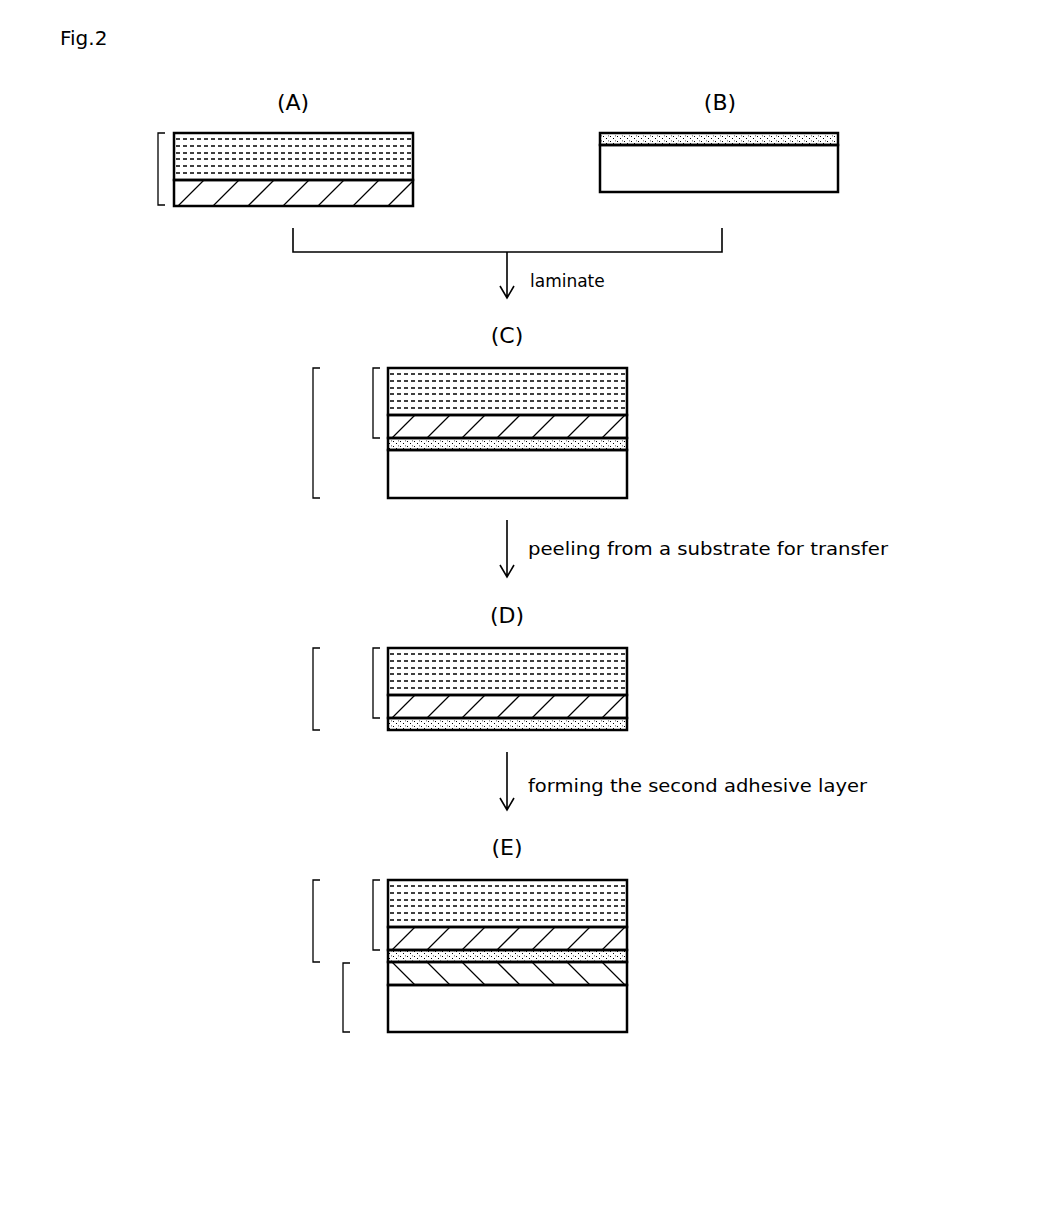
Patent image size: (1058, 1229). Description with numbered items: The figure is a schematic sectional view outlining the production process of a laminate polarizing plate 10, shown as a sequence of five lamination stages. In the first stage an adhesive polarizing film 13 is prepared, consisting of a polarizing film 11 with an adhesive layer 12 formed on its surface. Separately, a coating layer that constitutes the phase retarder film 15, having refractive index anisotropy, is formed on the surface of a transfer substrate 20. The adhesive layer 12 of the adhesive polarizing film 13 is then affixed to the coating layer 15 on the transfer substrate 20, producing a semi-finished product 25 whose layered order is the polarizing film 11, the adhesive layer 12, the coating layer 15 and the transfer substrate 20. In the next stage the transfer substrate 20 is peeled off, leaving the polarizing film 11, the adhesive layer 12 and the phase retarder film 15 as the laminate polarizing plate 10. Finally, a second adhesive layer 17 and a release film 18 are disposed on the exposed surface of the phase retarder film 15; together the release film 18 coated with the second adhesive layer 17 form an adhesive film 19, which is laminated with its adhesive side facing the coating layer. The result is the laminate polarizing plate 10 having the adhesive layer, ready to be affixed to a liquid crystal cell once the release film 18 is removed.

The laminate polarizing plate 10 is at (296, 805).
The polarizing film 11 is at (413, 145).
The adhesive layer 12 is at (413, 190).
The adhesive polarizing film 13 is at (249, 541).
The phase retarder film 15 is at (838, 140).
The second adhesive layer 17 is at (627, 973).
The release film 18 is at (627, 1010).
The adhesive film 19 is at (325, 997).
The transfer substrate 20 is at (838, 168).
The semi-finished product 25 is at (295, 433).